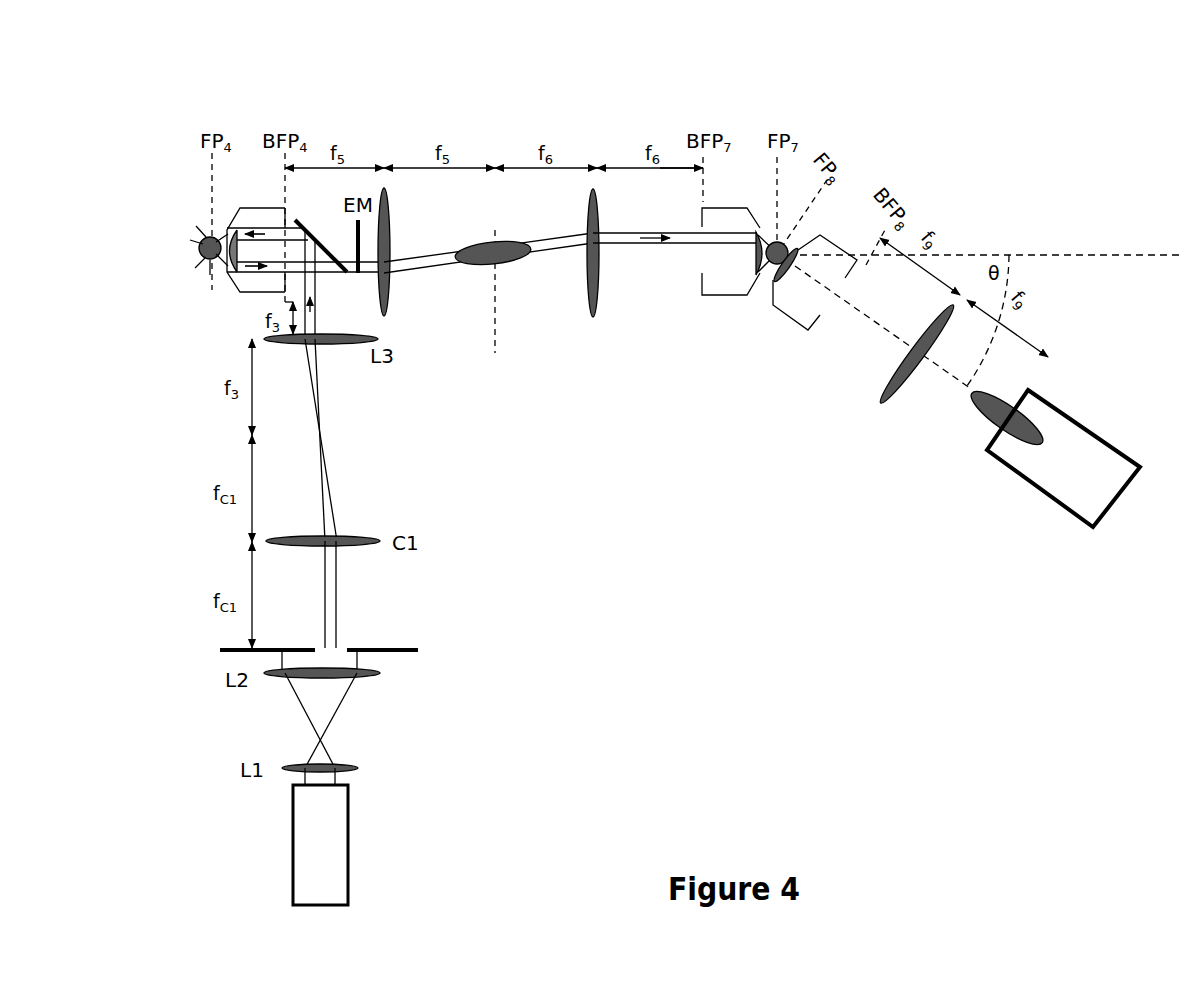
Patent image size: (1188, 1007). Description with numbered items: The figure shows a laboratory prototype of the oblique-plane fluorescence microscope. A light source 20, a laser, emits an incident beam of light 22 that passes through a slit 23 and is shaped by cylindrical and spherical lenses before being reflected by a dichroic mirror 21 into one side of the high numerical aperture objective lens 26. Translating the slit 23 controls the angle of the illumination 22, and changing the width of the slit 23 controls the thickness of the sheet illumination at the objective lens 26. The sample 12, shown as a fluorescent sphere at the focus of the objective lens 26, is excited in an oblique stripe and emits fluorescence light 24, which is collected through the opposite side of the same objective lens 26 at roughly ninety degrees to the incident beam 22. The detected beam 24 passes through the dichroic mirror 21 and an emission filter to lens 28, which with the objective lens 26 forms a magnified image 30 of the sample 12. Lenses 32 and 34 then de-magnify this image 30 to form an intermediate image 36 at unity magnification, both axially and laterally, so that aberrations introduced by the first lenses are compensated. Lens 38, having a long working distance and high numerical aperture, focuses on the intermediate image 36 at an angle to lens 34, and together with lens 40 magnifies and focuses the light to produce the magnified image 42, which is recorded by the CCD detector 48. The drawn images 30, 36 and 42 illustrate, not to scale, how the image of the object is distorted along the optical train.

The sample 12 is at (205, 268).
The light source 20 is at (320, 845).
The mirror 21 is at (321, 233).
The incident beam of light 22 is at (272, 226).
The slit 23 is at (487, 648).
The fluorescence light 24 is at (310, 275).
The objective lens 26 is at (299, 252).
The lens 28 is at (398, 254).
The magnified image 30 is at (493, 263).
The lens 32 is at (606, 253).
The lens 34 is at (739, 256).
The intermediate image 36 is at (772, 265).
The lens 38 is at (813, 285).
The lens 40 is at (924, 362).
The magnified image 42 is at (1003, 418).
The detector 48 is at (1063, 458).